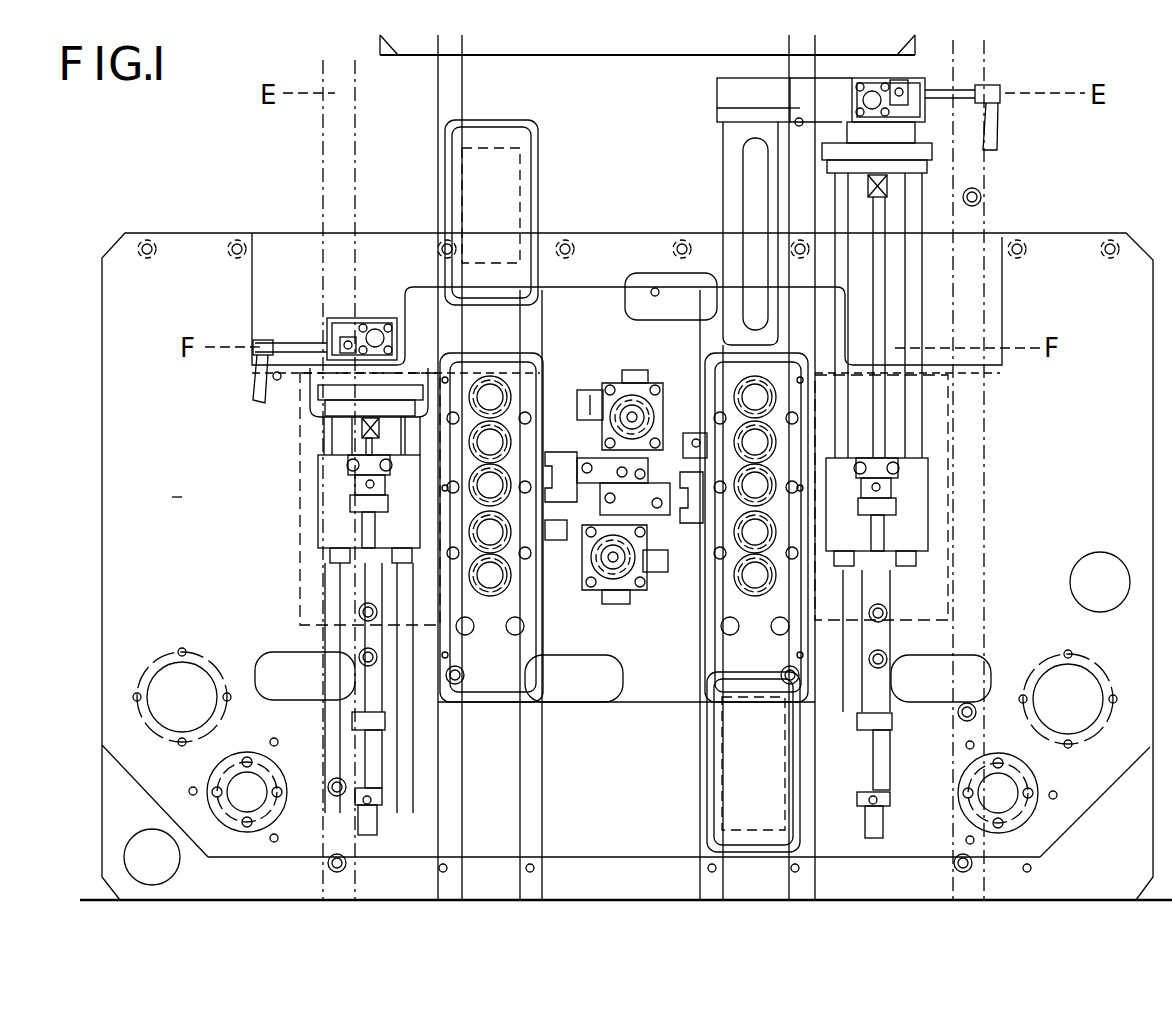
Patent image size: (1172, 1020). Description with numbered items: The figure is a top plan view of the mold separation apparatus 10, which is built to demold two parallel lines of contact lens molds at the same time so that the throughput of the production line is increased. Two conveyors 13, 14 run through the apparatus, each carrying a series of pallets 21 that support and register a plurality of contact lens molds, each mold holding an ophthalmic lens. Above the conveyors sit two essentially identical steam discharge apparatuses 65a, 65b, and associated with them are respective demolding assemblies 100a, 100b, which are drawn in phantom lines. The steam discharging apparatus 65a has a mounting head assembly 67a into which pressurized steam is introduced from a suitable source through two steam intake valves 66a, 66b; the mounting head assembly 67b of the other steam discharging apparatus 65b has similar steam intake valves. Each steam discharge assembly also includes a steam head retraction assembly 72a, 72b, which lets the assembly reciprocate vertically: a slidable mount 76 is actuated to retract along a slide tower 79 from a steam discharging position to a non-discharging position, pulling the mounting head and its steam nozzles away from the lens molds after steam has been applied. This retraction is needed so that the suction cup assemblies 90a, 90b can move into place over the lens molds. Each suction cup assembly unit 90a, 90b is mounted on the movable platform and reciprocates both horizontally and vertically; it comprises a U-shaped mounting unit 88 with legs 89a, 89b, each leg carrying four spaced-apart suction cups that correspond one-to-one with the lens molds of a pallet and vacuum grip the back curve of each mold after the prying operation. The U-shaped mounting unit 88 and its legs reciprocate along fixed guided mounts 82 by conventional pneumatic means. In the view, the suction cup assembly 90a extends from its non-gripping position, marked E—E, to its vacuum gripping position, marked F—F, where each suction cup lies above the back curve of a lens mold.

The mold separation apparatus 10 is at (215, 185).
The conveyor 13 is at (496, 892).
The conveyor 14 is at (764, 892).
The pallet 21 is at (506, 182).
The steam discharge apparatus 65a is at (545, 357).
The steam discharge apparatus 65b is at (712, 370).
The steam intake valve 66a is at (490, 420).
The steam intake valve 66b is at (498, 585).
The mounting head assembly 67a is at (492, 660).
The mounting head assembly 67b is at (715, 630).
The steam head retraction assembly 72a is at (578, 455).
The steam head retraction assembly 72b is at (658, 568).
The slidable mount 76 is at (556, 458).
The slide tower 79 is at (675, 445).
The fixed guided mount 82 is at (320, 470).
The U-shaped mounting unit 88 is at (470, 325).
The leg 89a is at (725, 190).
The leg 89b is at (770, 315).
The suction cup assembly unit 90a is at (300, 315).
The suction cup assembly unit 90b is at (695, 112).
The demolding assembly 100a is at (300, 545).
The demolding assembly 100b is at (948, 468).